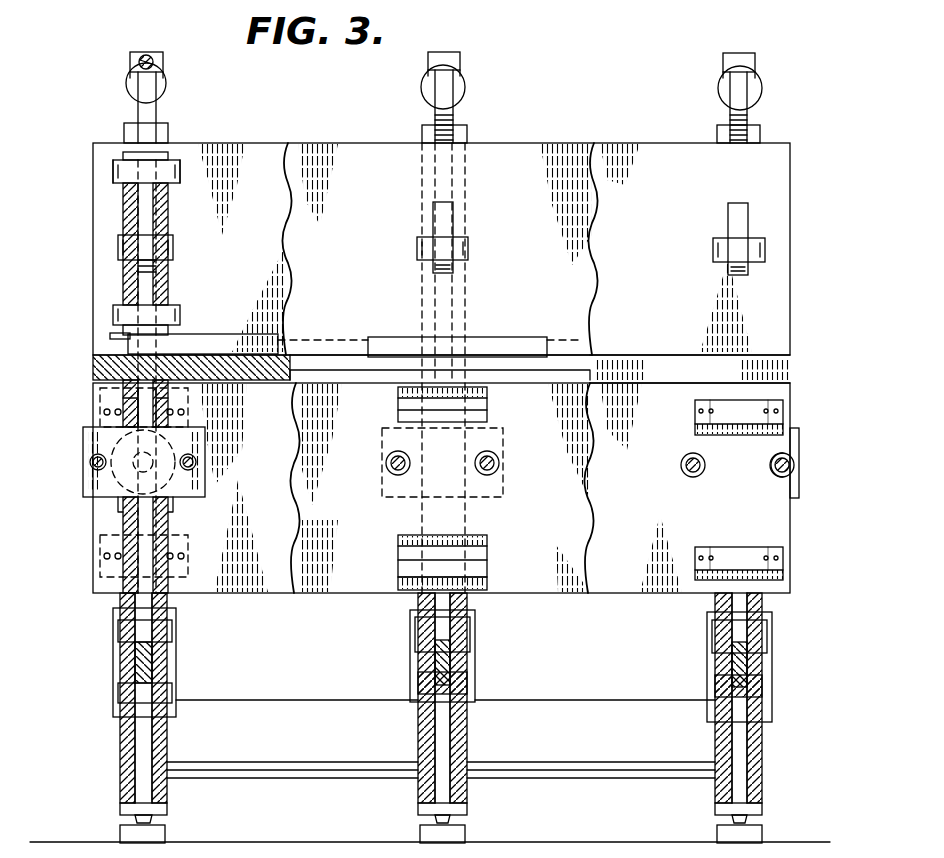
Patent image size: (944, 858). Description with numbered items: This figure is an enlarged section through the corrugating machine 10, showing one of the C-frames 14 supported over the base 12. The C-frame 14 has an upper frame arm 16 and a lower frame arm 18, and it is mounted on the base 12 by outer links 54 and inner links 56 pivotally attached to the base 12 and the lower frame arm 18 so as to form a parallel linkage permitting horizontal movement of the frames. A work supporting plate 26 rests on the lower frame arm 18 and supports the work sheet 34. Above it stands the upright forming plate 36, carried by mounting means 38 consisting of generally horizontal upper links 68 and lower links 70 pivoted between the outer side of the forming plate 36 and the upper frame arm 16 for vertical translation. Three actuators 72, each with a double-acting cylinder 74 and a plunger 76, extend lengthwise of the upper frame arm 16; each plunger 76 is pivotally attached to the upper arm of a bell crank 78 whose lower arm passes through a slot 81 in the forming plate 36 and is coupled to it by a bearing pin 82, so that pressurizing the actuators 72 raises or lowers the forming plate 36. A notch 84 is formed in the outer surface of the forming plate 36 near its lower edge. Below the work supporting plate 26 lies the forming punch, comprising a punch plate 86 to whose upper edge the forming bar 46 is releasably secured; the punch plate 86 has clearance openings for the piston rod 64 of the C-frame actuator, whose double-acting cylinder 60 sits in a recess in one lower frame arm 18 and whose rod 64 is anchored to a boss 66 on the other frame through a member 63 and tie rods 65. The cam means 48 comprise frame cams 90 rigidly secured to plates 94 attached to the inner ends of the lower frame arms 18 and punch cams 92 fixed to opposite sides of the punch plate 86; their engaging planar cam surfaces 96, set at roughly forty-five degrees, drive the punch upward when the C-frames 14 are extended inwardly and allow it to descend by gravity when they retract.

The corrugating machine 10 is at (595, 87).
The base 12 is at (119, 737).
The C-frames 14 is at (122, 208).
The upper frame arm 16 is at (128, 276).
The lower frame arm 18 is at (122, 521).
The work supporting plates 26 is at (95, 372).
The work sheet 34 is at (217, 348).
The forming plates 36 is at (268, 118).
The mounting means 38 is at (112, 155).
The forming bar 46 is at (514, 351).
The cam means 48 is at (398, 550).
The outer links 54 is at (113, 626).
The inner links 56 is at (140, 667).
The double-acting cylinder 60 is at (170, 486).
The member 63 is at (505, 483).
The piston rod 64 is at (150, 456).
The tie rods 65 is at (96, 465).
The boss 66 is at (96, 443).
The upper links 68 is at (113, 178).
The lower links 70 is at (113, 306).
The actuators 72 is at (130, 78).
The double-acting cylinder 74 is at (160, 82).
The plunger 76 is at (152, 60).
The bell cranks 78 is at (140, 112).
The slots 81 is at (436, 222).
The bearing pins 82 is at (118, 247).
The notch 84 is at (110, 338).
The punch plate 86 is at (487, 462).
The frame cams 90 is at (705, 433).
The punch cams 92 is at (420, 393).
The plates 94 is at (254, 587).
The cam surfaces 96 is at (488, 402).